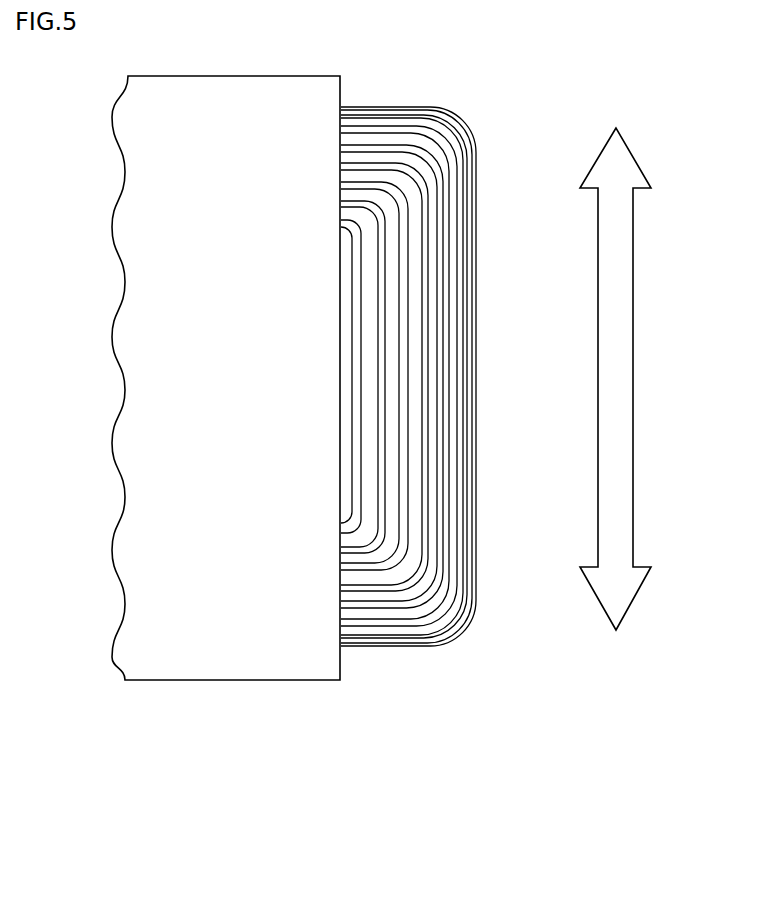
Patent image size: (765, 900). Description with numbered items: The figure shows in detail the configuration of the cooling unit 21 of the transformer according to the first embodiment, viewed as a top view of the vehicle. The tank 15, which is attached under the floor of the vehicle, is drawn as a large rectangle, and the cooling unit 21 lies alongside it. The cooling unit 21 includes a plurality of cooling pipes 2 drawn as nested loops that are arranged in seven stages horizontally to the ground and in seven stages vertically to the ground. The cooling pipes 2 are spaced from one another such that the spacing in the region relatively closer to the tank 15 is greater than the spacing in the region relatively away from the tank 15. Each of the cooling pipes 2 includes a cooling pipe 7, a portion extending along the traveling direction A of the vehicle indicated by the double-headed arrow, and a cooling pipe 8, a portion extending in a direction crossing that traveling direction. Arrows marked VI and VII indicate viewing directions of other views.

The tank 15 is at (228, 97).
The cooling unit 21 is at (433, 351).
The cooling pipes 2 is at (344, 316).
The cooling pipe 7 is at (473, 427).
The cooling pipe 8 is at (352, 553).
The traveling direction A is at (627, 379).
The view direction VII is at (512, 379).
The view direction VI is at (300, 716).